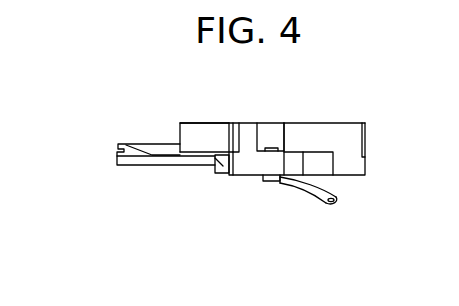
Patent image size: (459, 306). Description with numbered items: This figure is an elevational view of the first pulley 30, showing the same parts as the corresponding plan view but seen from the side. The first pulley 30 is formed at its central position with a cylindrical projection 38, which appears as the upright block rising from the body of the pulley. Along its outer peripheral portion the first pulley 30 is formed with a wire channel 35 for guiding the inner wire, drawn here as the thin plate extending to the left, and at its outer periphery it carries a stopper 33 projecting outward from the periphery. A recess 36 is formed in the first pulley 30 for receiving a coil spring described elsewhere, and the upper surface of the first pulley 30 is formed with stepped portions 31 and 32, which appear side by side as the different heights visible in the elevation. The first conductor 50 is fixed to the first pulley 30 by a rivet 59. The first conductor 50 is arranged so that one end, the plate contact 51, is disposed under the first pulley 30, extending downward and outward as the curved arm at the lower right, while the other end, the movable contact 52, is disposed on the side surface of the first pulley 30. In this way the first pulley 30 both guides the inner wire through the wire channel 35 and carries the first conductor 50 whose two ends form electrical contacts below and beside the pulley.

The first pulley 30 is at (162, 112).
The stepped portion 31 is at (245, 125).
The stepped portion 32 is at (328, 132).
The stopper 33 is at (327, 165).
The wire channel 35 is at (118, 154).
The recess 36 is at (152, 153).
The cylindrical projection 38 is at (190, 123).
The first conductor 50 is at (248, 180).
The plate contact 51 is at (332, 202).
The movable contact 52 is at (212, 172).
The rivet 59 is at (272, 148).